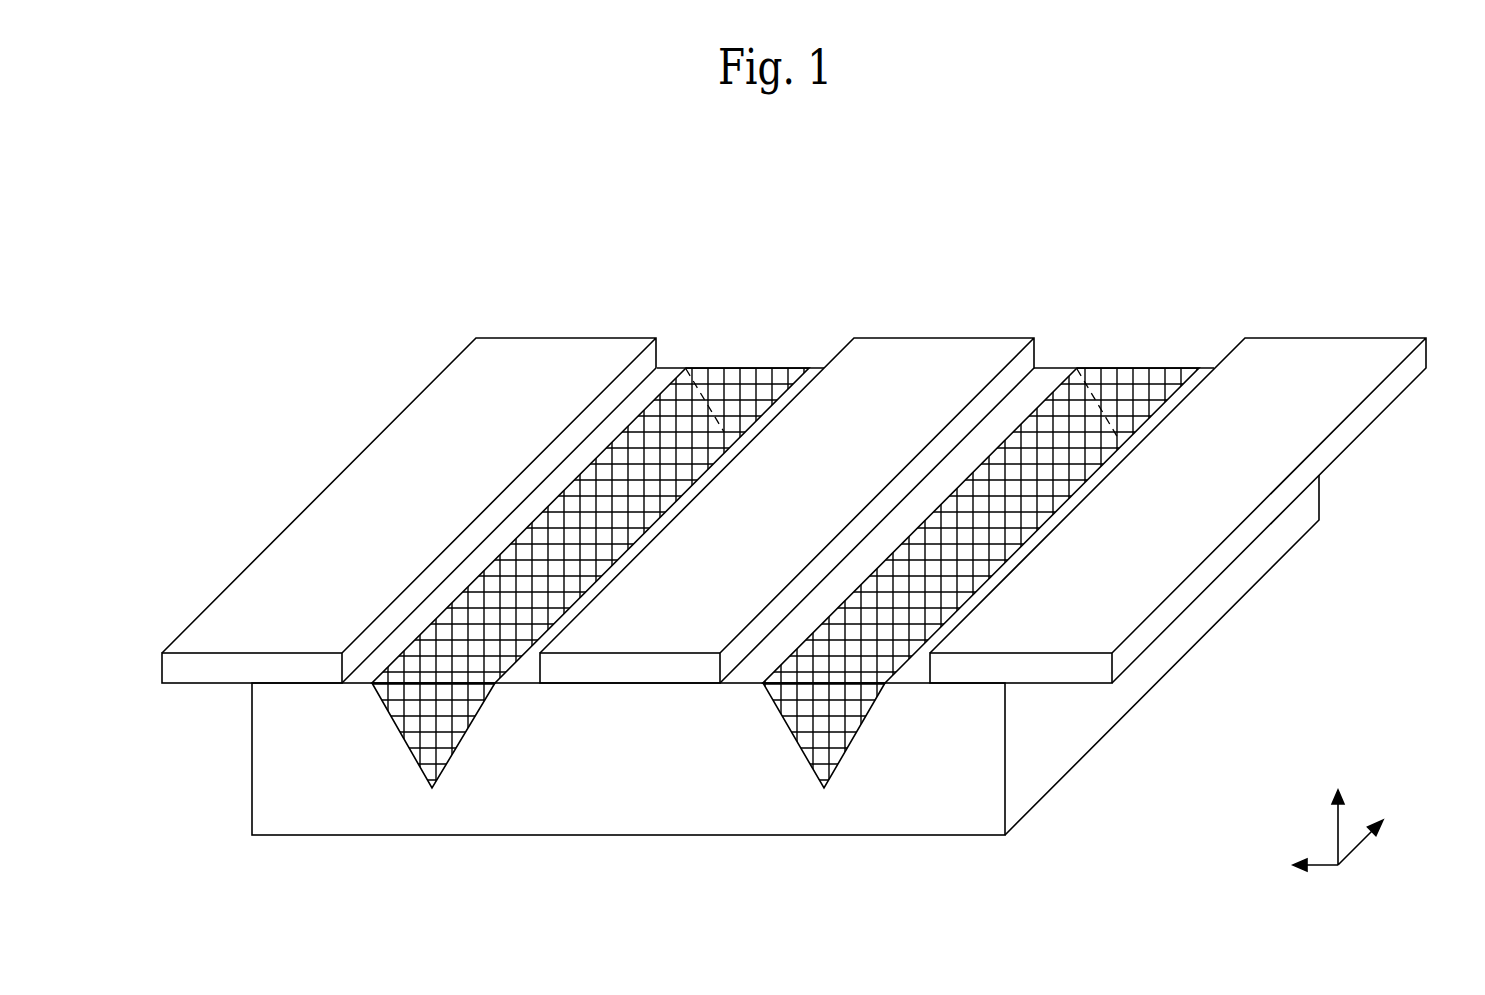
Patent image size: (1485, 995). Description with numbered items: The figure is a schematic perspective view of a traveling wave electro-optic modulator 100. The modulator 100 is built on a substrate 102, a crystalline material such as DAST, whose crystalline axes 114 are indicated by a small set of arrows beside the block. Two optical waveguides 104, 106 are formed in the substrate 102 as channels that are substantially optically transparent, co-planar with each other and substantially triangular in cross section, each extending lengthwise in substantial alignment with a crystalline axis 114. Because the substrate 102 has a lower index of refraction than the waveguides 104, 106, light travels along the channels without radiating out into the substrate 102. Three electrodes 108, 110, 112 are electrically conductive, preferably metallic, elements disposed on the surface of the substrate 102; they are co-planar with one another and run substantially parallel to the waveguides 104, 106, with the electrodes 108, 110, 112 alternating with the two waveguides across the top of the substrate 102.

The traveling wave electro-optic modulator 100 is at (349, 376).
The substrate 102 is at (537, 835).
The optical waveguide 104 is at (732, 368).
The optical waveguide 106 is at (1125, 368).
The electrode 108 is at (567, 338).
The electrode 110 is at (930, 338).
The electrode 112 is at (1322, 338).
The crystalline axes 114 is at (1296, 795).